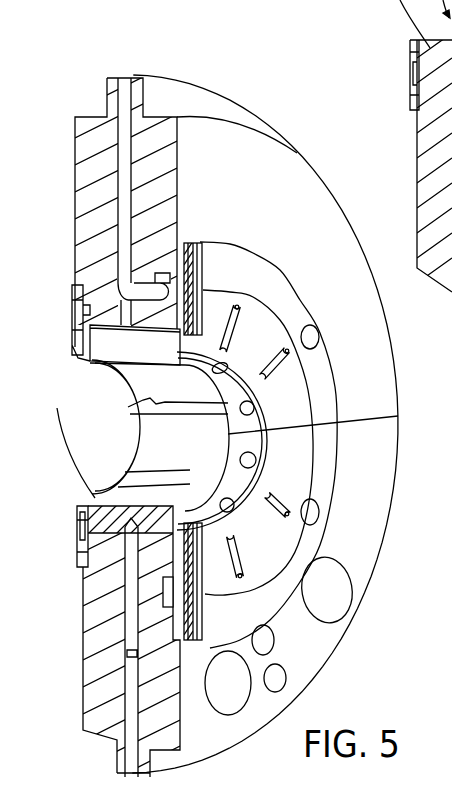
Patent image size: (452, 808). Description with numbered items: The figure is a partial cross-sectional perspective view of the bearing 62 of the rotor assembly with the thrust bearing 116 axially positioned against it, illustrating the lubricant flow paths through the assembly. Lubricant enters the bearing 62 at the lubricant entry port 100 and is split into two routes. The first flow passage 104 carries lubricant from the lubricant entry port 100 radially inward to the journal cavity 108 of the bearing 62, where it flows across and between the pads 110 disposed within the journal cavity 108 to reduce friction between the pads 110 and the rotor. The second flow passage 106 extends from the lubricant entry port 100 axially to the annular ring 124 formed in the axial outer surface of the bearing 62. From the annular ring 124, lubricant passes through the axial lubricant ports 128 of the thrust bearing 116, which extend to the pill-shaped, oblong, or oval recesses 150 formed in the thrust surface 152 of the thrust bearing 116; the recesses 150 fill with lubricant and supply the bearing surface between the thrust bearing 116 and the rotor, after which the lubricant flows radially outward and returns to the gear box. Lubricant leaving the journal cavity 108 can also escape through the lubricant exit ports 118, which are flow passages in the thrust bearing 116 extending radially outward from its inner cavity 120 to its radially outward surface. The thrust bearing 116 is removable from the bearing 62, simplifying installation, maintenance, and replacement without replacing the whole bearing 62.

The bearing 62 is at (345, 170).
The lubricant entry port 100 is at (118, 188).
The first flow passage 104 is at (120, 310).
The second flow passage 106 is at (157, 283).
The journal cavity 108 is at (118, 476).
The pads 110 is at (152, 438).
The thrust bearing 116 is at (249, 268).
The lubricant exit ports 118 is at (194, 243).
The inner cavity 120 is at (263, 478).
The annular ring 124 is at (172, 592).
The axial lubricant ports 128 is at (290, 515).
The recesses 150 is at (270, 357).
The thrust surface 152 is at (298, 427).